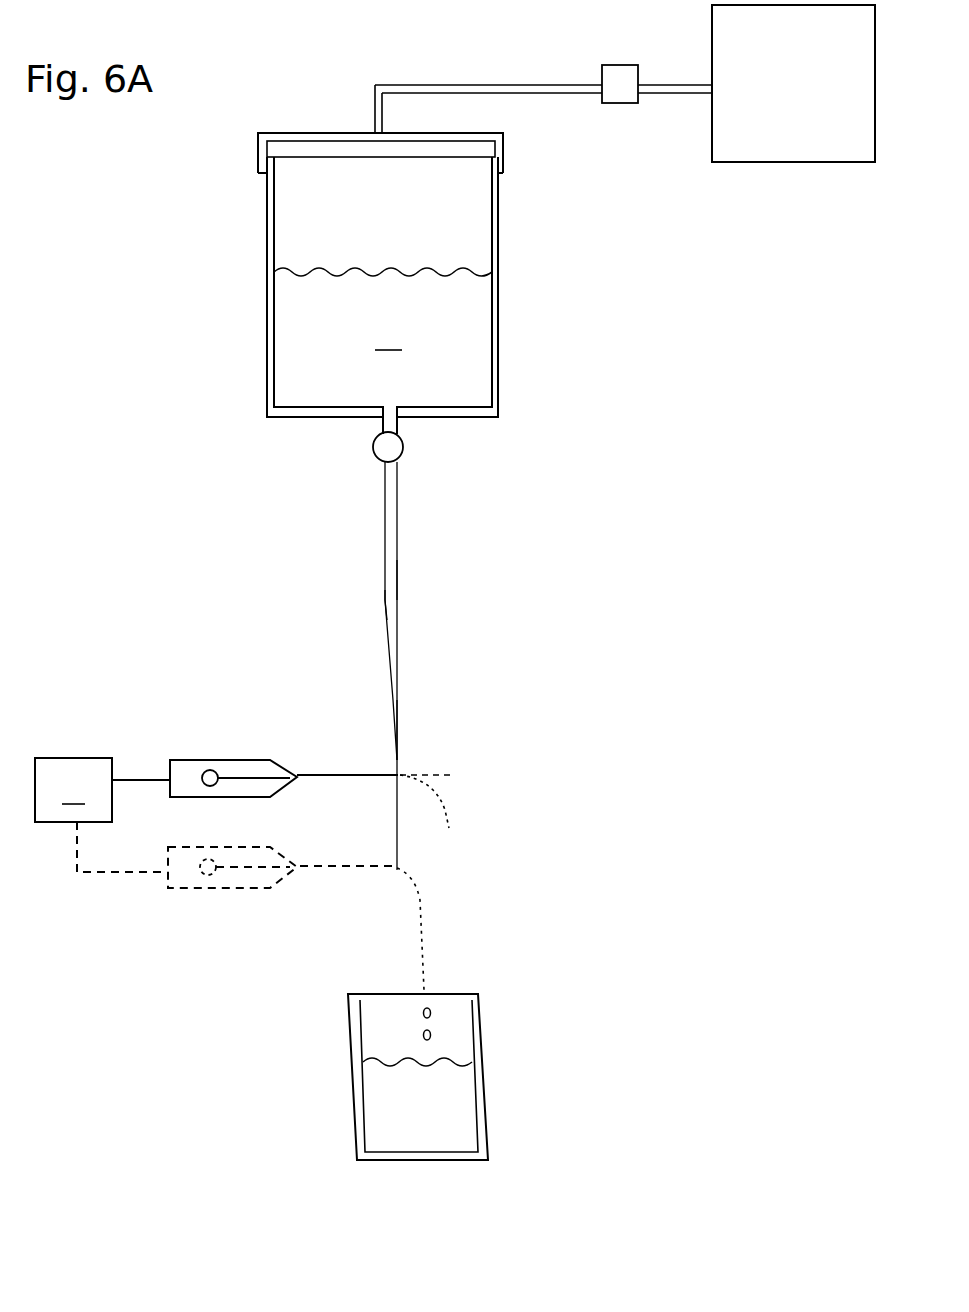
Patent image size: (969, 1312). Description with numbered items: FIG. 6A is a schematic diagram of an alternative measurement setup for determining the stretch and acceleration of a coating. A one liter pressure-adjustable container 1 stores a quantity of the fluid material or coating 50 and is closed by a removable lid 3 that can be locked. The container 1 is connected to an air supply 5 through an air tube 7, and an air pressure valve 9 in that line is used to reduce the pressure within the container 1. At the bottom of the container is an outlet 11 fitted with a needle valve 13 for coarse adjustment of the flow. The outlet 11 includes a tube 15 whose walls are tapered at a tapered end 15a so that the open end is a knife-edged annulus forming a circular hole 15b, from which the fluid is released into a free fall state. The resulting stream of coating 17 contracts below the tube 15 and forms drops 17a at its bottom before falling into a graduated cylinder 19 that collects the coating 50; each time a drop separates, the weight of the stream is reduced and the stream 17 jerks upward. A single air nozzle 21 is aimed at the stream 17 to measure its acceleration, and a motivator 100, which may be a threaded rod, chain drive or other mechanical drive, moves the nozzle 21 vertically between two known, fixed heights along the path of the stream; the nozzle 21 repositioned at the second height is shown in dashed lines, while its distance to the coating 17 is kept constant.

The pressure-adjustable container 1 is at (267, 262).
The removable lid 3 is at (258, 152).
The air supply 5 is at (773, 162).
The air tube 7 is at (563, 93).
The air pressure valve 9 is at (619, 73).
The outlet 11 is at (350, 540).
The needle valve 13 is at (398, 445).
The tube 15 is at (382, 470).
The tapered end 15a is at (398, 580).
The hole 15b is at (390, 603).
The stream of coating 17 is at (393, 705).
The drops 17a is at (400, 943).
The graduated cylinder 19 is at (483, 1087).
The air nozzle 21 is at (222, 760).
The coating 50 is at (390, 1110).
The motivator 100 is at (102, 815).